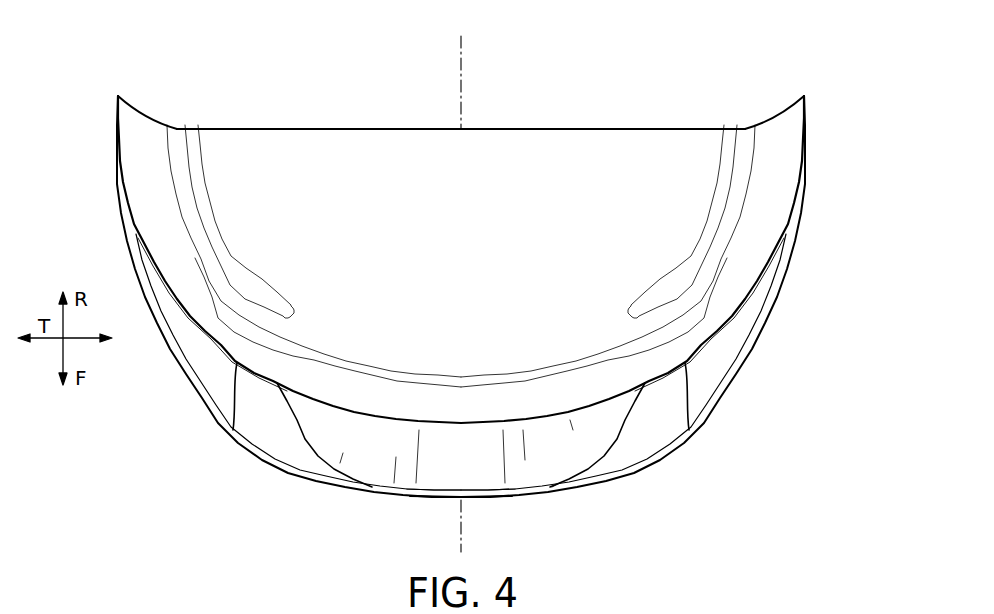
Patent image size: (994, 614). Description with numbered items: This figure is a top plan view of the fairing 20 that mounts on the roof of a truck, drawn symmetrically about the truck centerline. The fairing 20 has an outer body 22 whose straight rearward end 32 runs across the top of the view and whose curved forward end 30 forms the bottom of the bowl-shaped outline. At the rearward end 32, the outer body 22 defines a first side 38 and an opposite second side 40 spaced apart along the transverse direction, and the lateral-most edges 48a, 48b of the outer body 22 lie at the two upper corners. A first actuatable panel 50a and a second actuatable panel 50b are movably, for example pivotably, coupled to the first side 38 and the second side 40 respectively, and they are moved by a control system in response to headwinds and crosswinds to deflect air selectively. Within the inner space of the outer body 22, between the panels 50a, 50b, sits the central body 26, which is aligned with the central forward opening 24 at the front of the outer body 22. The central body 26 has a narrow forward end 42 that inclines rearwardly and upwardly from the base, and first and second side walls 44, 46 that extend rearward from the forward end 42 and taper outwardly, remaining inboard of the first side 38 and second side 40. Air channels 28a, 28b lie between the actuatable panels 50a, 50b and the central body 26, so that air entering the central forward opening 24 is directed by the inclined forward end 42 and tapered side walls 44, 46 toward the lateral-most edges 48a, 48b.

The fairing 20 is at (457, 278).
The outer body 22 is at (470, 245).
The central forward opening 24 is at (600, 466).
The central body 26 is at (470, 463).
The first air channel 28a is at (262, 425).
The second air channel 28b is at (659, 425).
The forward end 30 is at (373, 510).
The rearward end 32 is at (313, 116).
The first side 38 is at (118, 208).
The second side 40 is at (804, 194).
The forward end 42 is at (481, 480).
The first side wall 44 is at (317, 420).
The second side wall 46 is at (605, 420).
The lateral-most edge 48a is at (118, 96).
The lateral-most edge 48b is at (804, 96).
The first actuatable panel 50a is at (198, 364).
The second actuatable panel 50b is at (725, 362).